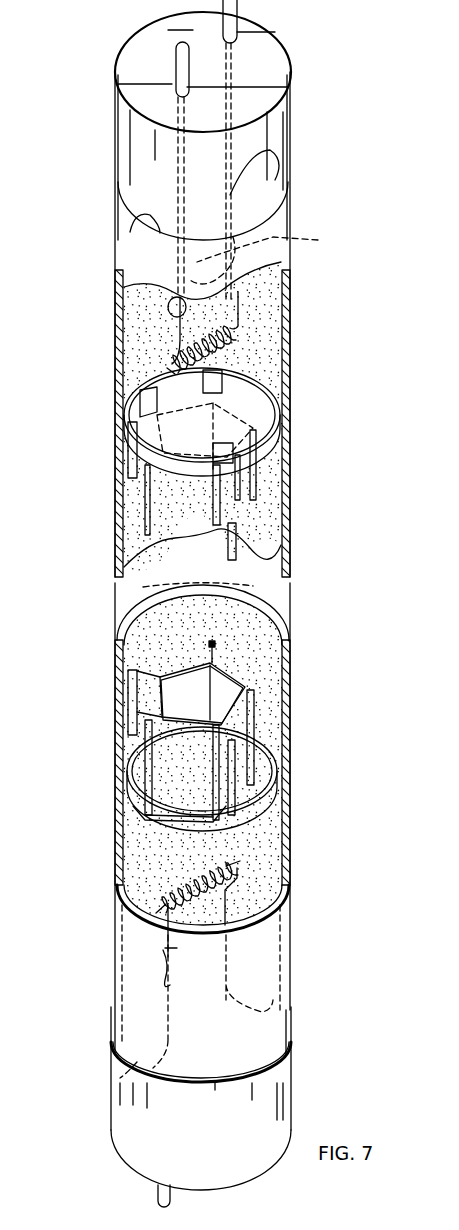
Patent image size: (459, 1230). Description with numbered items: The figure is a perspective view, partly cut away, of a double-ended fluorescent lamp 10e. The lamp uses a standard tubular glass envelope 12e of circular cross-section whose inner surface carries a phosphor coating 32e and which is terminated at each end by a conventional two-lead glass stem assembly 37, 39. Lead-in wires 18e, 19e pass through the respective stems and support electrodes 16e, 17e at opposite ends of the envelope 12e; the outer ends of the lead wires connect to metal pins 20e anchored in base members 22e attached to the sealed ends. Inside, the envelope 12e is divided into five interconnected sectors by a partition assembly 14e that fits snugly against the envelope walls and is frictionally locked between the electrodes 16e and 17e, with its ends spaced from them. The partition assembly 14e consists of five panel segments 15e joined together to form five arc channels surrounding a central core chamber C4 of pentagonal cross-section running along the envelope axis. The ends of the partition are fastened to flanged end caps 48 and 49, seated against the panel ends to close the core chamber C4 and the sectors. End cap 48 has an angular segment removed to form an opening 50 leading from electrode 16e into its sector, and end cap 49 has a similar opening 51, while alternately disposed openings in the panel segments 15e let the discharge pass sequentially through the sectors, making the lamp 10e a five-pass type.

The double-ended fluorescent lamp 10e is at (66, 252).
The tubular glass envelope 12e is at (285, 523).
The partition assembly 14e is at (143, 697).
The panel segments 15e is at (155, 497).
The electrode 16e is at (183, 880).
The electrode 17e is at (237, 348).
The lead-in wires 18e is at (242, 888).
The lead-in wires 19e is at (172, 340).
The metal pins 20e is at (165, 28).
The base members 22e is at (265, 63).
The phosphor coating 32e is at (257, 633).
The glass stem assembly 37 is at (200, 983).
The glass stem assembly 39 is at (230, 264).
The end cap 48 is at (253, 787).
The end cap 49 is at (245, 407).
The opening 50 is at (192, 818).
The opening 51 is at (155, 437).
The central core chamber C4 is at (217, 697).